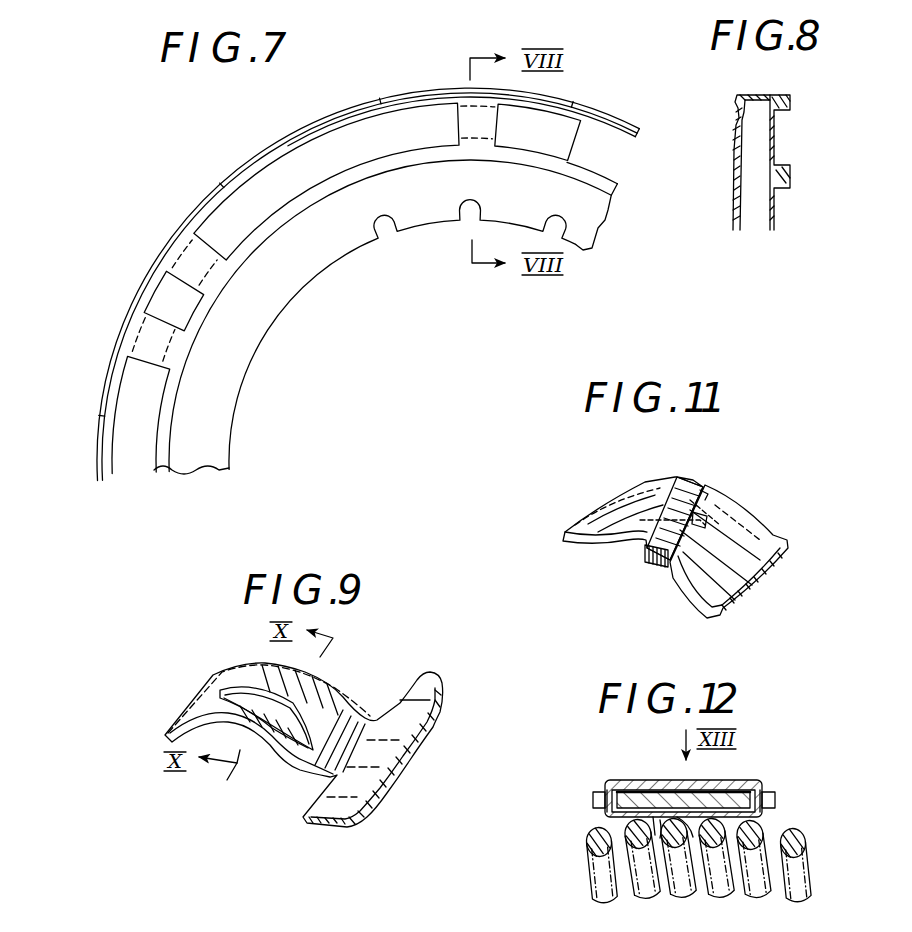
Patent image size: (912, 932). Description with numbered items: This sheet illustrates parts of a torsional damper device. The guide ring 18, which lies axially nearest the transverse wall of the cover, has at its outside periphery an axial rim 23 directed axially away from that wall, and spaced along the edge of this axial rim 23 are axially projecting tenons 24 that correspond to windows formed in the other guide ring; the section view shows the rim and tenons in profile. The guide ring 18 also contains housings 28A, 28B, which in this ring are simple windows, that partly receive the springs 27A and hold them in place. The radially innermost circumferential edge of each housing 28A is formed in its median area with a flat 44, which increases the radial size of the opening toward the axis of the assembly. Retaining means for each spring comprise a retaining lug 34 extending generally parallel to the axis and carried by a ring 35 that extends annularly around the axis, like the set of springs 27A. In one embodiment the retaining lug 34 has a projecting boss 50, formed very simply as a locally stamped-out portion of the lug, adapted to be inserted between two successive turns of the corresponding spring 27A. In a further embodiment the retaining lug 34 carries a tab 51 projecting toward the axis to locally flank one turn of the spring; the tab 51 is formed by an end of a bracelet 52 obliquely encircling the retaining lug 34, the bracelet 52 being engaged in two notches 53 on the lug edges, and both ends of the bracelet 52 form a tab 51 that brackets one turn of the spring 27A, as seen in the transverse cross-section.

In FIG. 7, the guide ring 18 is at (150, 255).
In FIG. 8, the guide ring 18 is at (723, 224).
In FIG. 7, the axial rim 23 is at (287, 141).
In FIG. 8, the axial rim 23 is at (766, 203).
In FIG. 7, the tenons 24 is at (222, 186).
In FIG. 8, the tenons 24 is at (787, 163).
In FIG. 7, the housings 28A is at (600, 135).
In FIG. 7, the housings 28B is at (187, 306).
In FIG. 7, the flat 44 is at (350, 177).
In FIG. 9, the retaining lug 34 is at (220, 664).
In FIG. 11, the retaining lug 34 is at (632, 470).
In FIG. 12, the retaining lug 34 is at (781, 784).
In FIG. 9, the ring 35 is at (441, 666).
In FIG. 9, the projecting boss 50 is at (267, 747).
In FIG. 11, the tab 51 is at (710, 520).
In FIG. 12, the tab 51 is at (659, 842).
In FIG. 11, the bracelet 52 is at (690, 473).
In FIG. 12, the bracelet 52 is at (648, 774).
In FIG. 11, the notches 53 is at (709, 485).
In FIG. 12, the notches 53 is at (609, 786).
In FIG. 12, the springs 27A is at (576, 860).